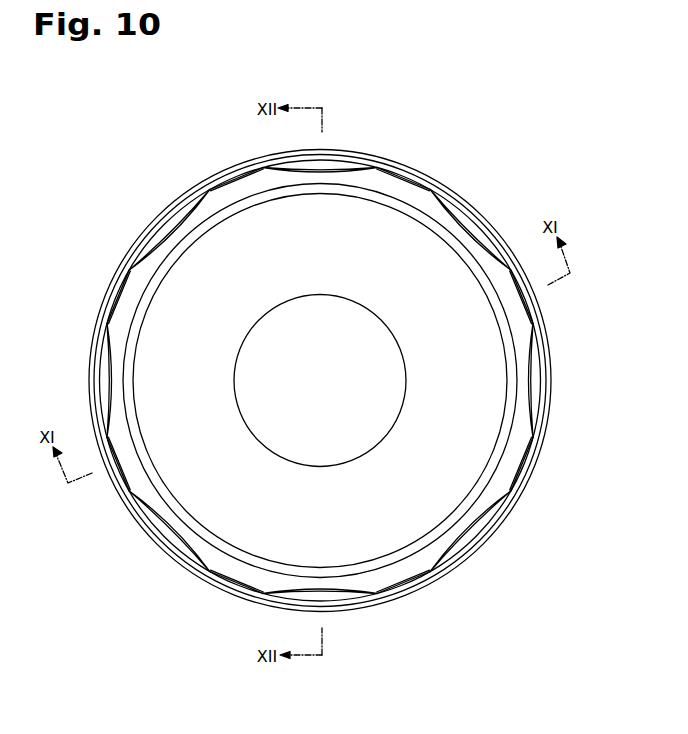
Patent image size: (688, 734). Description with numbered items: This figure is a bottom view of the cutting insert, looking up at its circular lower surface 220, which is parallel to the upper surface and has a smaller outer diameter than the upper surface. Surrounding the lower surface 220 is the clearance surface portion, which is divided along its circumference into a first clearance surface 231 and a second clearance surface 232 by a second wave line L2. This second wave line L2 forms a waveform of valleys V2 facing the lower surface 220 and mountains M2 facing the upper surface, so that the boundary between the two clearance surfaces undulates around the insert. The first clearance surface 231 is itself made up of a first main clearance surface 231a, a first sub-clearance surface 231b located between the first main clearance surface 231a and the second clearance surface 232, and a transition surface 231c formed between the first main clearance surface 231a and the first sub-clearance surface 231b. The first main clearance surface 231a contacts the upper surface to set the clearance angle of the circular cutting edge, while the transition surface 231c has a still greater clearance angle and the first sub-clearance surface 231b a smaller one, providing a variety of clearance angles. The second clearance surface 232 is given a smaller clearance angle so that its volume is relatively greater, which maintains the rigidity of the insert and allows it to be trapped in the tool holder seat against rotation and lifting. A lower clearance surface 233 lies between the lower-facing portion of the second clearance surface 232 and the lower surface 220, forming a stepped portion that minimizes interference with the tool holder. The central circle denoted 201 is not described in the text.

The center boss / shaft hole 201 is at (325, 326).
The lower surface 220 is at (192, 493).
The first clearance surface 231 is at (320, 435).
The first main clearance surface 231a is at (377, 603).
The first sub-clearance surface 231b is at (323, 593).
The transition surface 231c is at (343, 602).
The second clearance surface 232 is at (420, 570).
The lower clearance surface 233 is at (277, 567).
The second wave line L2 is at (458, 535).
The valleys V2 is at (468, 528).
The mountains M2 is at (528, 490).